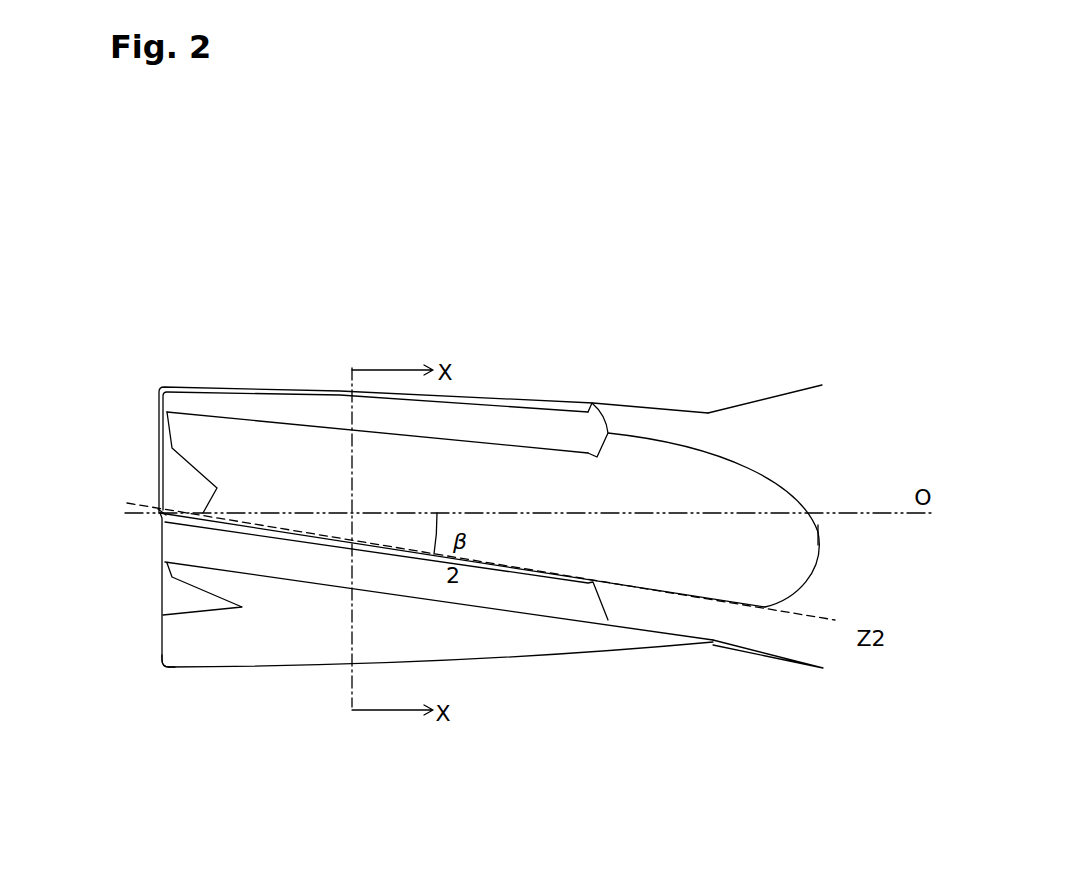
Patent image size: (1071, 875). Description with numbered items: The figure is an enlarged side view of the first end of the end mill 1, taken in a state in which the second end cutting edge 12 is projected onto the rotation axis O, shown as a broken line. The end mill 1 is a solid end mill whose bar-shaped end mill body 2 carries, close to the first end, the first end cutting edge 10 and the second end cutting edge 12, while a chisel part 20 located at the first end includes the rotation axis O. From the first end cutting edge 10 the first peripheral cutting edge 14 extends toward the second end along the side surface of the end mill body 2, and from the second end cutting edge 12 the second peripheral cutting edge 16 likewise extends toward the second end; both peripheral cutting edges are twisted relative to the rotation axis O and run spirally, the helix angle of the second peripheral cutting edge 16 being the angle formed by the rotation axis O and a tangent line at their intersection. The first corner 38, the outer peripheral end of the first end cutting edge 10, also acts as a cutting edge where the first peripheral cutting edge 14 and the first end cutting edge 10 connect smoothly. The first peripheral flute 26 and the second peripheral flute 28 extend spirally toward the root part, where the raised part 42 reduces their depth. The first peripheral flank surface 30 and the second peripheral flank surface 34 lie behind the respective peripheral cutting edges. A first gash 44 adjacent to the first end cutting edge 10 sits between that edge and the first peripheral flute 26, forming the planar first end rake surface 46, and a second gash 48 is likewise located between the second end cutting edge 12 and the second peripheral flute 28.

The end mill 1 is at (827, 290).
The end mill body 2 is at (717, 378).
The first end cutting edge 10 is at (158, 425).
The second end cutting edge 12 is at (158, 512).
The first peripheral cutting edge 14 is at (187, 383).
The second peripheral cutting edge 16 is at (490, 562).
The chisel part 20 is at (162, 518).
The first peripheral flute 26 is at (462, 648).
The second peripheral flute 28 is at (273, 487).
The first peripheral flank surface 30 is at (573, 412).
The second peripheral flank surface 34 is at (297, 540).
The first corner 38 is at (160, 668).
The raised part 42 is at (810, 538).
The first gash 44 is at (136, 589).
The first end rake surface 46 is at (190, 593).
The second gash 48 is at (185, 493).